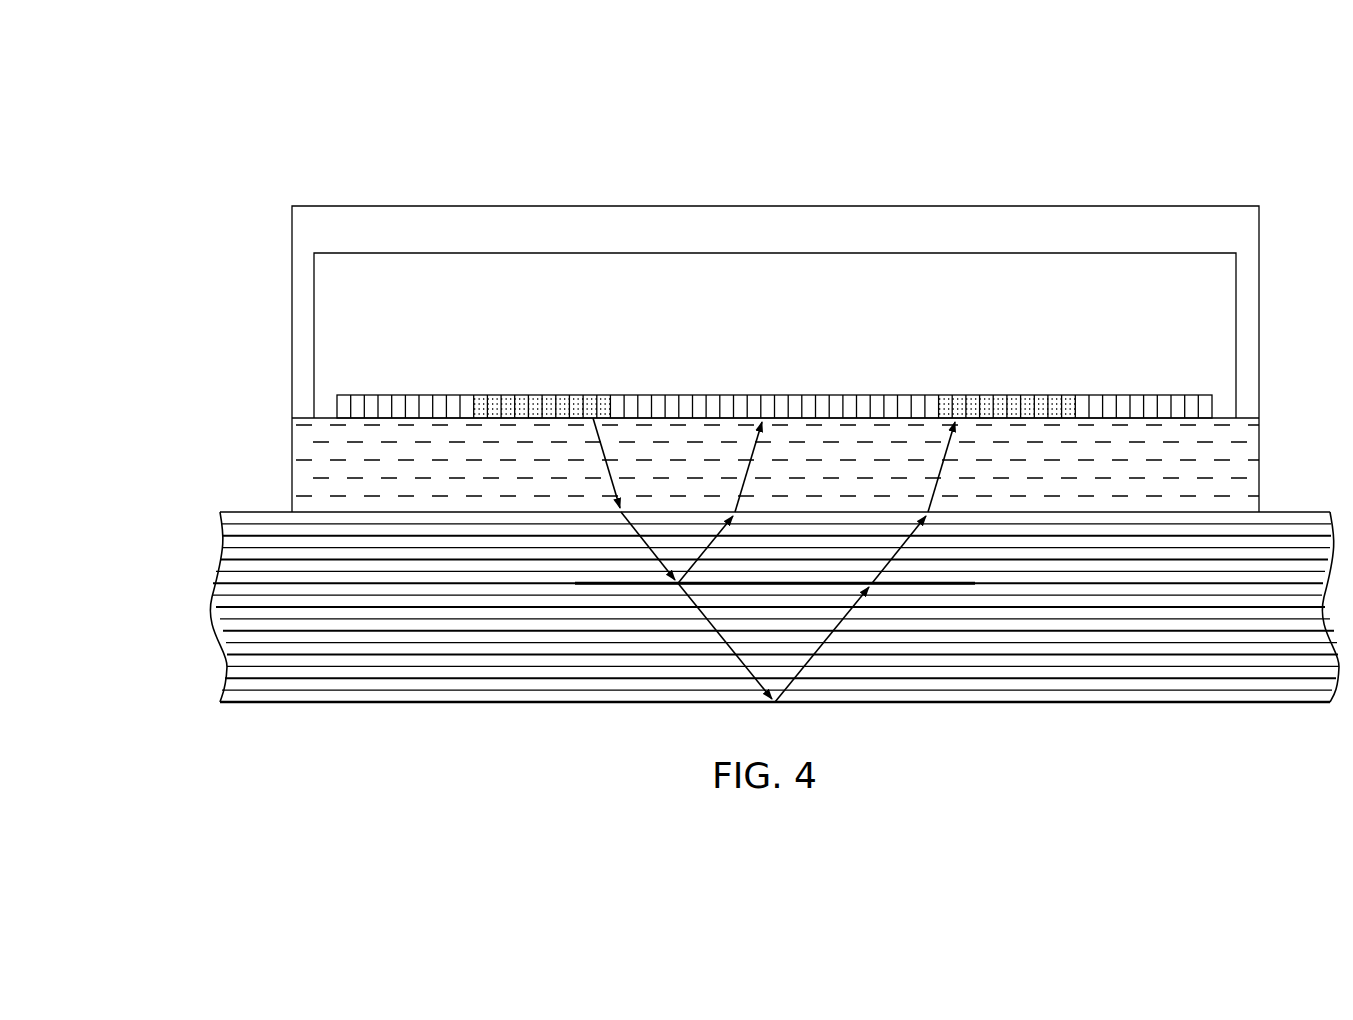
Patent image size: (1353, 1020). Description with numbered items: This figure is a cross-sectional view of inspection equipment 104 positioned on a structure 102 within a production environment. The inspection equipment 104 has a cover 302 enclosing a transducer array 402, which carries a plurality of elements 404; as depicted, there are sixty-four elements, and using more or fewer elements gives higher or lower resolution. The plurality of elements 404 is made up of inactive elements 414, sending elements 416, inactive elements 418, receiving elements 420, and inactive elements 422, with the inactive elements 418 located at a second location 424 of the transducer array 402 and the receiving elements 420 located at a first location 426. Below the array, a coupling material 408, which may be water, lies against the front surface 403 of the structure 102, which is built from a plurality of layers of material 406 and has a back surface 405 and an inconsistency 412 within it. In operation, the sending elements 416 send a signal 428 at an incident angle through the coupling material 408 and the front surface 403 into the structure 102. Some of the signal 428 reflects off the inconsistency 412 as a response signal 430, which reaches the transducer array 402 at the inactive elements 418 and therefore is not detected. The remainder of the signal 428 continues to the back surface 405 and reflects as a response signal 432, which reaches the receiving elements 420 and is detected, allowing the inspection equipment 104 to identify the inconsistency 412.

The inspection equipment 104 is at (392, 152).
The cover 302 is at (290, 275).
The transducer array 402 is at (313, 390).
The plurality of elements 404 is at (620, 335).
The inactive elements 414 is at (398, 392).
The sending elements 416 is at (535, 392).
The inactive elements 418 is at (742, 392).
The receiving elements 420 is at (985, 392).
The inactive elements 422 is at (1153, 392).
The second location 424 is at (815, 365).
The first location 426 is at (1020, 365).
The coupling material 408 is at (290, 437).
The front surface 403 is at (230, 510).
The structure 102 is at (190, 565).
The plurality of layers of material 406 is at (145, 626).
The back surface 405 is at (210, 702).
The inconsistency 412 is at (942, 590).
The signal 428 is at (603, 468).
The response signal 430 is at (747, 467).
The response signal 432 is at (950, 468).